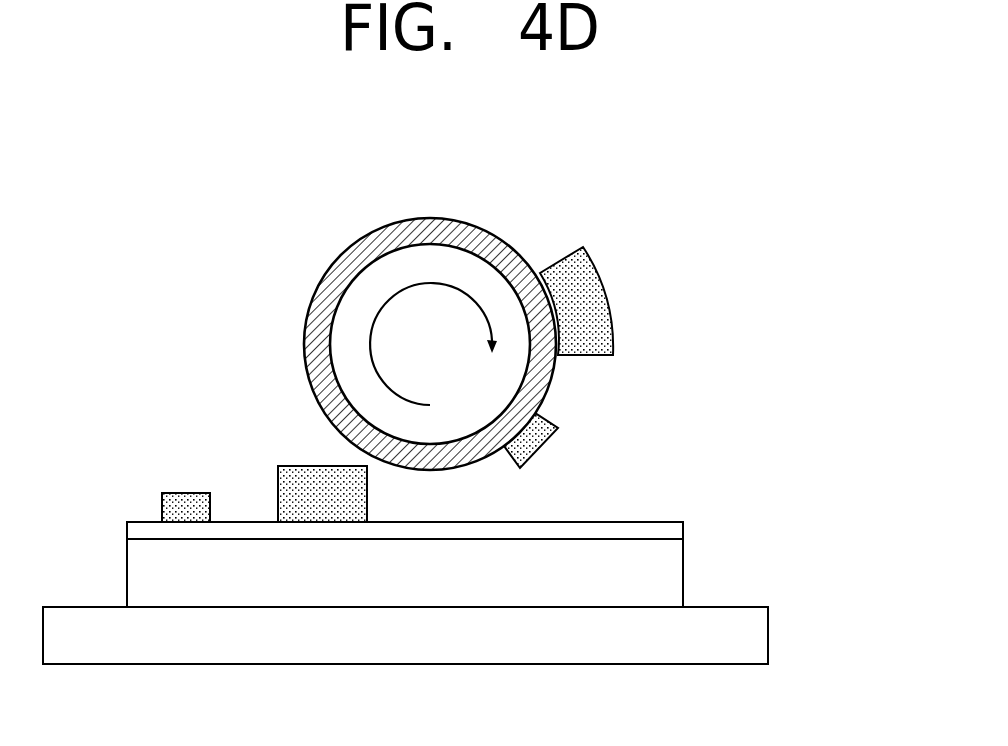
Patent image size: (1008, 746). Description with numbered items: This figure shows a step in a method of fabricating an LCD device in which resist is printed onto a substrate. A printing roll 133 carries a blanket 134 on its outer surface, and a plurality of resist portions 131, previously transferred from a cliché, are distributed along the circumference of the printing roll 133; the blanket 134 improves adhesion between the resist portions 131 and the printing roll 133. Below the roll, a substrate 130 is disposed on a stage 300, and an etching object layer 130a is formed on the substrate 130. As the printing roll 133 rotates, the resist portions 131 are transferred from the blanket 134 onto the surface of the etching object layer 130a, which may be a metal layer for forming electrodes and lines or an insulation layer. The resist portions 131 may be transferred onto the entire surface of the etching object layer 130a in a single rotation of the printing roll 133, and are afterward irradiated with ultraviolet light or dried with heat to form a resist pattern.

The printing roll 133 is at (357, 287).
The blanket 134 is at (315, 305).
The resist portions 131 is at (600, 312).
The etching object layer 130a is at (675, 532).
The substrate 130 is at (675, 580).
The stage 300 is at (757, 635).